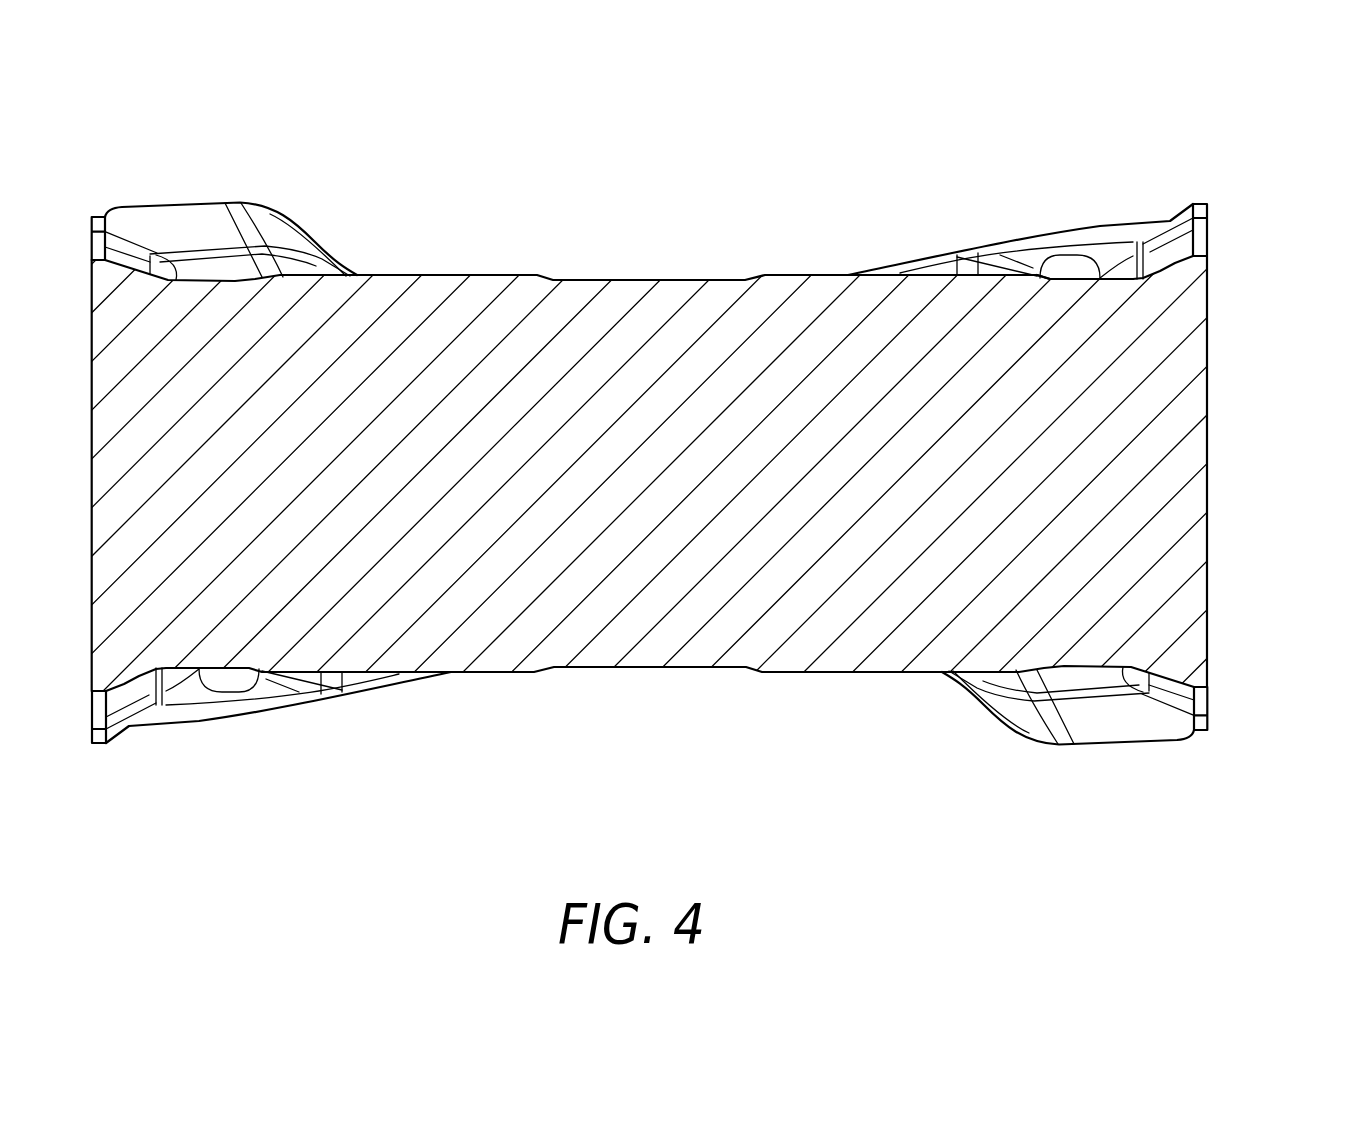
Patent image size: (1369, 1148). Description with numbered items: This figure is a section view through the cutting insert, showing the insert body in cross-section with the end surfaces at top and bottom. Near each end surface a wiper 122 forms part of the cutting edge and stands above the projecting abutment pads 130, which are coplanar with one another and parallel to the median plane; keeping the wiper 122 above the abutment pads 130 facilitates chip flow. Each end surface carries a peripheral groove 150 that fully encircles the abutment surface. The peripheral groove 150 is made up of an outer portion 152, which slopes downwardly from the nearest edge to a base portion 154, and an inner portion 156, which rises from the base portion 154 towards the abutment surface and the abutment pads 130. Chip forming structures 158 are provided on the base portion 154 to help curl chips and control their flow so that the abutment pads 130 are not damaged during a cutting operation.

The wiper 122 is at (257, 202).
The projecting abutment pads 130 is at (405, 275).
The peripheral groove 150 is at (1120, 219).
The outer portion 152 is at (1192, 288).
The base portion 154 is at (1152, 310).
The inner portion 156 is at (1093, 312).
The chip forming structures 158 is at (1052, 268).